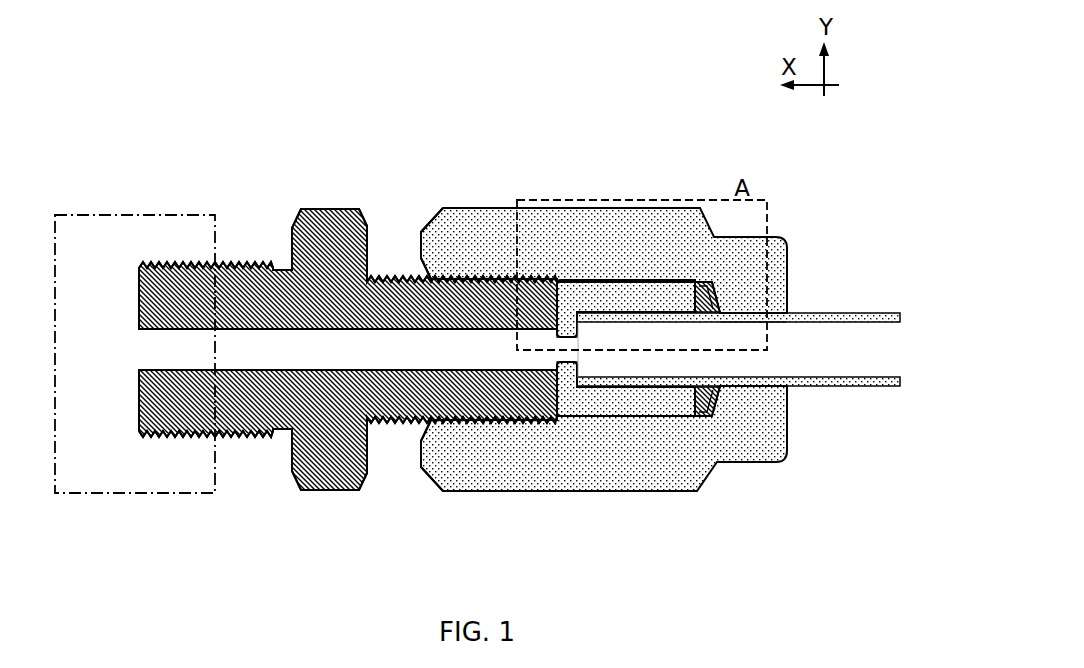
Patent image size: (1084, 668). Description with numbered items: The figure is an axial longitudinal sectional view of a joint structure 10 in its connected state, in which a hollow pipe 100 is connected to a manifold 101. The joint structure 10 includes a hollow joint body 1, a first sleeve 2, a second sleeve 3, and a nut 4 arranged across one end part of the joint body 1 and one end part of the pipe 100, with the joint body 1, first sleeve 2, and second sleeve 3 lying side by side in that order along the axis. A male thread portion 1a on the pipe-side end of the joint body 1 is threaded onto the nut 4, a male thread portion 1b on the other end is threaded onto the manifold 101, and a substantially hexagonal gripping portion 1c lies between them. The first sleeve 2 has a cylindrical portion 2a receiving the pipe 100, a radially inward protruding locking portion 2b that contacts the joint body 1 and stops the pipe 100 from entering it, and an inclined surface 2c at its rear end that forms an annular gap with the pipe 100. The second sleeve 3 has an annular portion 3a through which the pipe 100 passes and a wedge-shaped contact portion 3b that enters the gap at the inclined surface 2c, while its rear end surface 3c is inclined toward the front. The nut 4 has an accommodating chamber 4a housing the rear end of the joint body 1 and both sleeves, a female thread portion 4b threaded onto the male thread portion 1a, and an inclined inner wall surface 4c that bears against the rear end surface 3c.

The joint body 1 is at (292, 302).
The male thread portion 1a is at (417, 277).
The male thread portion 1b is at (278, 273).
The gripping portion 1c is at (327, 208).
The first sleeve 2 is at (633, 156).
The cylindrical portion 2a is at (610, 300).
The locking portion 2b is at (562, 302).
The inclined surface 2c is at (705, 293).
The second sleeve 3 is at (752, 535).
The annular portion 3a is at (696, 390).
The contact portion 3b is at (693, 392).
The rear end surface 3c is at (713, 393).
The nut 4 is at (753, 303).
The accommodating chamber 4a is at (704, 283).
The female thread portion 4b is at (467, 267).
The inner wall surface 4c is at (690, 316).
The joint structure 10 is at (546, 318).
The pipe 100 is at (835, 387).
The manifold 101 is at (185, 493).